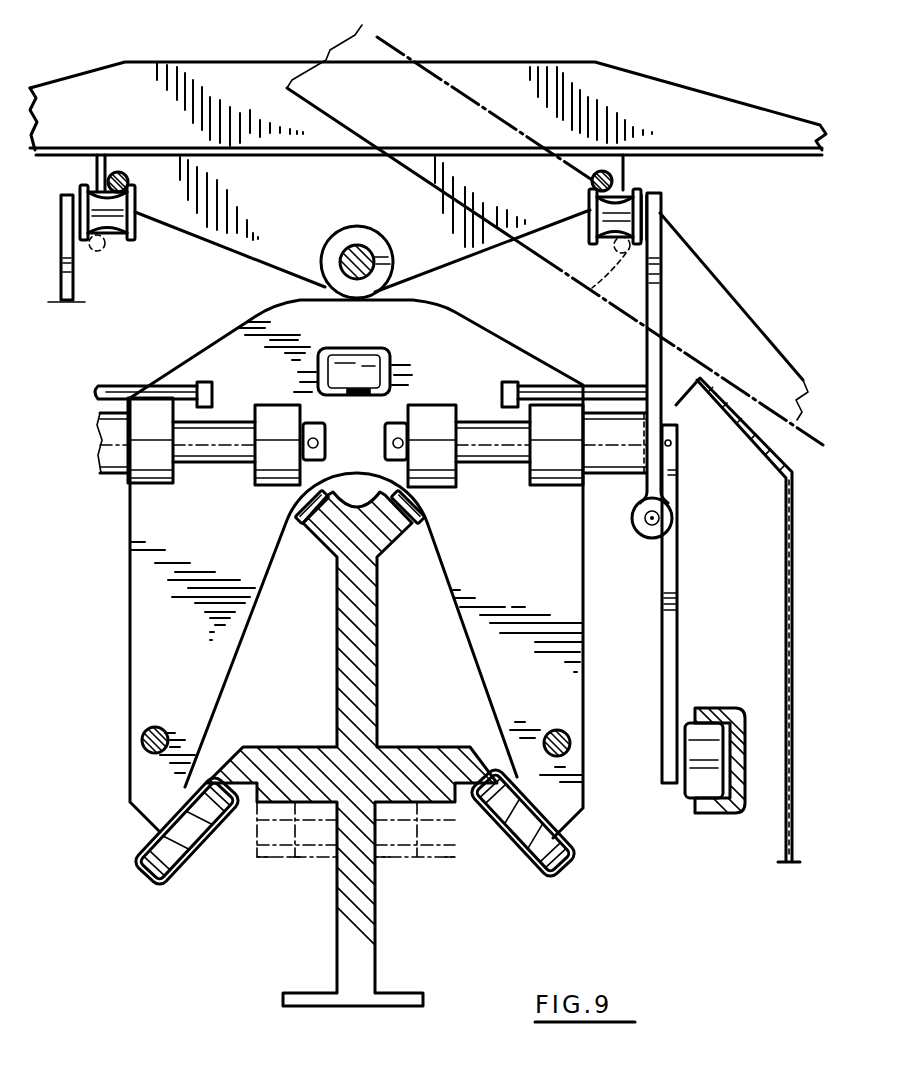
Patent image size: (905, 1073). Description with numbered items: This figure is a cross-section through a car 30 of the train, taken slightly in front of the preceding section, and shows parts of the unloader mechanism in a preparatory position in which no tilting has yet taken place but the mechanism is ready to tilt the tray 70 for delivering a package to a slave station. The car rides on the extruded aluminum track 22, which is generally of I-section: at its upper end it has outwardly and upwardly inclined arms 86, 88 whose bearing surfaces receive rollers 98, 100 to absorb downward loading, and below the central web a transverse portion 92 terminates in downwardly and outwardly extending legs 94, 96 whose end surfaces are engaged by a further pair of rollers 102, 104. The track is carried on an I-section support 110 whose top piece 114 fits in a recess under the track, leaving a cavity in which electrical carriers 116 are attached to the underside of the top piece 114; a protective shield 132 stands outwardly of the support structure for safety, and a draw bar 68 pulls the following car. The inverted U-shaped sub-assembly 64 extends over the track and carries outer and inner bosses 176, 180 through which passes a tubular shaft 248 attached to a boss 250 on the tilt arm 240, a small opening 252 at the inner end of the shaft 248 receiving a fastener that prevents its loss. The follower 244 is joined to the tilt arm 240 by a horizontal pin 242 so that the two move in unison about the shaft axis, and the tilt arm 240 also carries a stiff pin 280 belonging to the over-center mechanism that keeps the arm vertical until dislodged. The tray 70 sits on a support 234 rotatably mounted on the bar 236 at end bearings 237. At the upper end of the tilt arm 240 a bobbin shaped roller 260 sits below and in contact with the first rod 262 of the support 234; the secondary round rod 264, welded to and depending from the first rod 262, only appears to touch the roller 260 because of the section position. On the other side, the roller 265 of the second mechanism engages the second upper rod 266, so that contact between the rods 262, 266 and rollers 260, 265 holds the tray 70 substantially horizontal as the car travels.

The track 22 is at (326, 630).
The car 30 is at (760, 266).
The sub-assembly 64 is at (595, 632).
The draw bar 68 is at (344, 362).
The tray 70 is at (484, 98).
The arm 86 is at (318, 532).
The arm 88 is at (385, 542).
The transverse portion 92 is at (403, 762).
The leg 94 is at (225, 762).
The leg 96 is at (486, 762).
The roller 98 is at (292, 526).
The roller 100 is at (432, 526).
The roller 102 is at (140, 845).
The roller 104 is at (573, 846).
The I-section support 110 is at (338, 930).
The top piece 114 is at (295, 780).
The carriers 116 is at (308, 870).
The protective shield 132 is at (789, 618).
The outer boss 176 is at (150, 468).
The inner boss 180 is at (275, 465).
The support 234 is at (445, 268).
The bar 236 is at (345, 252).
The end bearing 237 is at (352, 232).
The tilt arm 240 is at (662, 258).
The horizontal pin 242 is at (659, 518).
The follower 244 is at (675, 573).
The tubular shaft 248 is at (232, 420).
The boss 250 is at (115, 475).
The small opening 252 is at (388, 440).
The bobbin shaped roller 260 is at (592, 197).
The first rod 262 is at (610, 178).
The secondary round rod 264 is at (592, 284).
The roller 265 is at (133, 235).
The second upper rod 266 is at (118, 172).
The stiff pin 280 is at (140, 386).